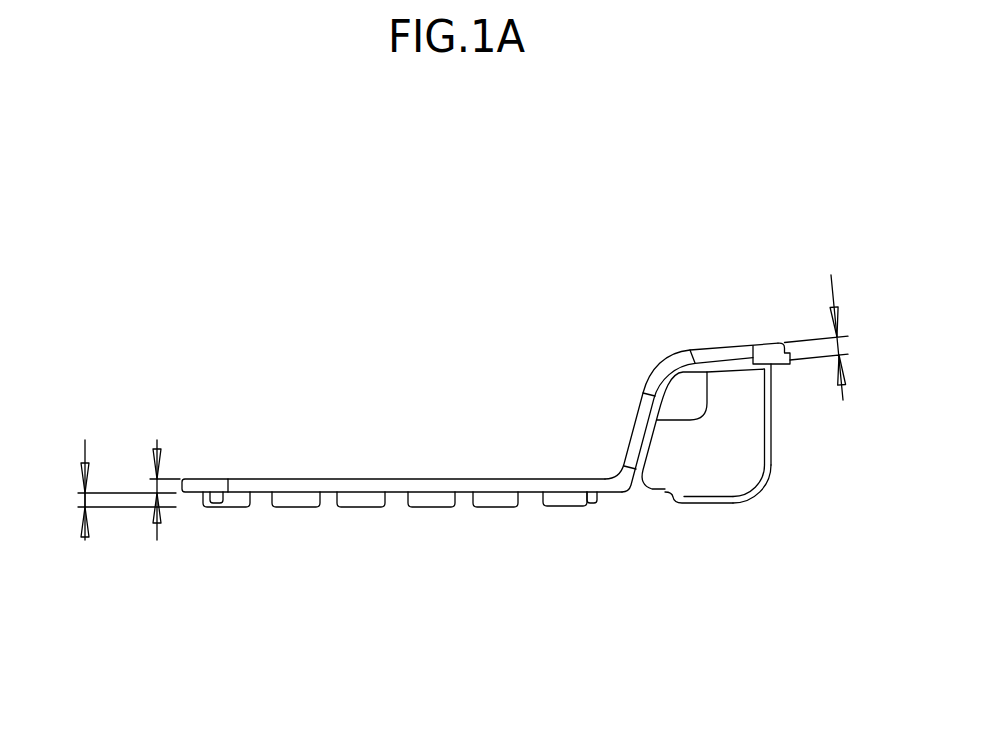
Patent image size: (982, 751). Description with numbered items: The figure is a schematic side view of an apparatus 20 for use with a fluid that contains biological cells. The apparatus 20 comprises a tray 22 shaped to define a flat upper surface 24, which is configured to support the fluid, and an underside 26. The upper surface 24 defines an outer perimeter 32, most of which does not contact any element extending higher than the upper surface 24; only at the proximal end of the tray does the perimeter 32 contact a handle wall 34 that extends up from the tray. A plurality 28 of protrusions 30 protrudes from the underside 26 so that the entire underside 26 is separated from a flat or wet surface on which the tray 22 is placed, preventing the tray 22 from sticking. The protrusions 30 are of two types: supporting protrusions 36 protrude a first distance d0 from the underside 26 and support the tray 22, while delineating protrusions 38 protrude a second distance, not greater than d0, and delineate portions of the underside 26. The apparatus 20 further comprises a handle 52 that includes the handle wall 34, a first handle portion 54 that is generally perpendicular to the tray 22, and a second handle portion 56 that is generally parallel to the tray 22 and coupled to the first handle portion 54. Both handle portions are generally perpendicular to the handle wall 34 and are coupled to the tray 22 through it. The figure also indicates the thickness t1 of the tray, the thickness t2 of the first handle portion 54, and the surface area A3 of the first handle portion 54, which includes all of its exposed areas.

The apparatus 20 is at (260, 333).
The tray 22 is at (612, 432).
The flat upper surface 24 is at (332, 478).
The underside 26 is at (320, 523).
The plurality of protrusions 28 is at (205, 527).
The protrusions 30 is at (592, 540).
The outer perimeter 32 is at (388, 516).
The handle wall 34 is at (615, 451).
The supporting protrusions 36 is at (607, 526).
The delineating protrusions 38 is at (550, 525).
The handle 52 is at (782, 335).
The first handle portion 54 is at (767, 511).
The second handle portion 56 is at (717, 341).
The surface area of first handle portion A3 is at (730, 455).
The first distance d0 is at (115, 505).
The plate thickness t1 is at (164, 505).
The thickness of first handle portion t2 is at (822, 350).